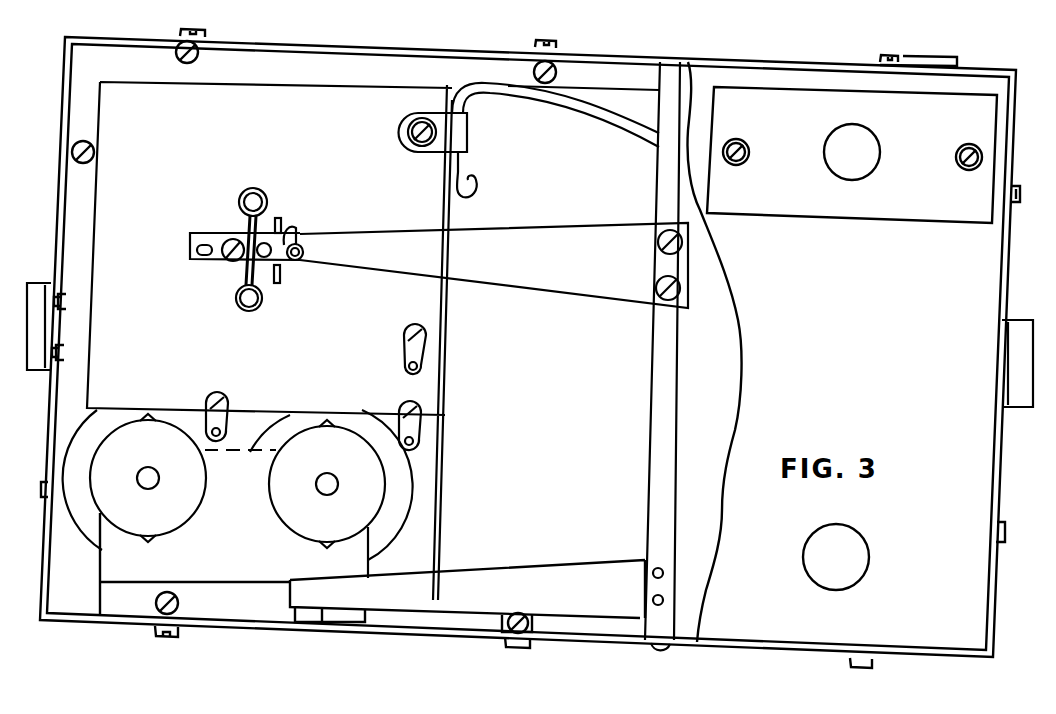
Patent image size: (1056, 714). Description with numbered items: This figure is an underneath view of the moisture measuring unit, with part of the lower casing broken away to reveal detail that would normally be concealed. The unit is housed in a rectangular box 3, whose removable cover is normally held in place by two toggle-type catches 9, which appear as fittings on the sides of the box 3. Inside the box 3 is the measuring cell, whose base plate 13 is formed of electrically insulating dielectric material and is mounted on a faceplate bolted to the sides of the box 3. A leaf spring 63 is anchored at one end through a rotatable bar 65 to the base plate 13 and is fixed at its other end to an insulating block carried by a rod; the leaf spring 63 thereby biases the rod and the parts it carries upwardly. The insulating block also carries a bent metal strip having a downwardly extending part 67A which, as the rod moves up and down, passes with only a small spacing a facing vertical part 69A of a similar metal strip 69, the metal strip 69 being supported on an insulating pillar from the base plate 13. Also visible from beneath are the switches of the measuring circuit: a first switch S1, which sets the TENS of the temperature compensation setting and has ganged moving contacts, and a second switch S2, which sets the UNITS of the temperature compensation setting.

The rectangular box 3 is at (420, 630).
The toggle-type catch 9 is at (44, 297).
The base plate 13 is at (422, 316).
The leaf spring 63 is at (528, 283).
The rotatable bar 65 is at (656, 382).
The downwardly extending part 67A is at (262, 218).
The metal strip 69 is at (196, 257).
The facing vertical part 69A is at (245, 271).
The first switch S1 is at (159, 525).
The second switch S2 is at (338, 530).